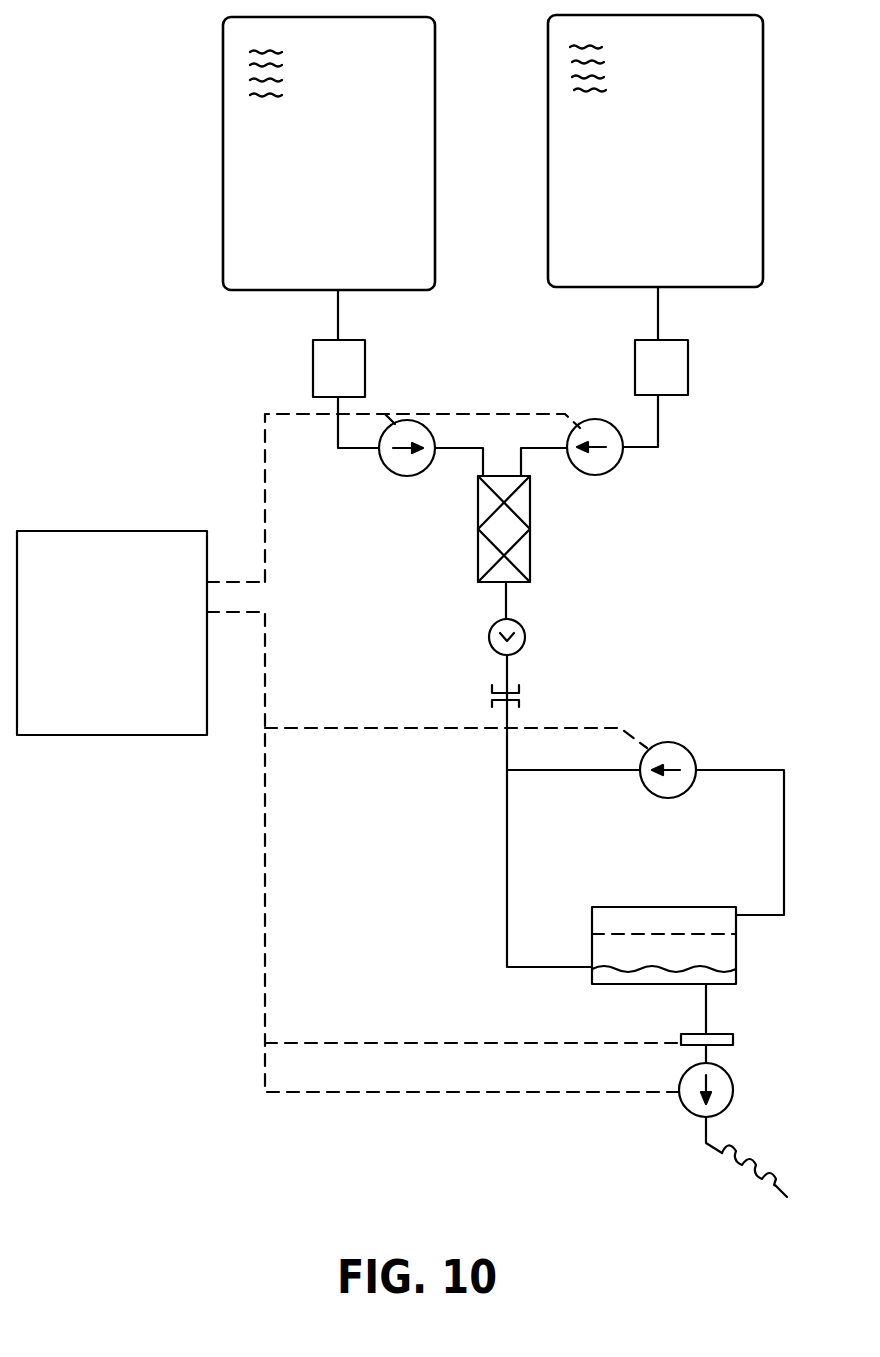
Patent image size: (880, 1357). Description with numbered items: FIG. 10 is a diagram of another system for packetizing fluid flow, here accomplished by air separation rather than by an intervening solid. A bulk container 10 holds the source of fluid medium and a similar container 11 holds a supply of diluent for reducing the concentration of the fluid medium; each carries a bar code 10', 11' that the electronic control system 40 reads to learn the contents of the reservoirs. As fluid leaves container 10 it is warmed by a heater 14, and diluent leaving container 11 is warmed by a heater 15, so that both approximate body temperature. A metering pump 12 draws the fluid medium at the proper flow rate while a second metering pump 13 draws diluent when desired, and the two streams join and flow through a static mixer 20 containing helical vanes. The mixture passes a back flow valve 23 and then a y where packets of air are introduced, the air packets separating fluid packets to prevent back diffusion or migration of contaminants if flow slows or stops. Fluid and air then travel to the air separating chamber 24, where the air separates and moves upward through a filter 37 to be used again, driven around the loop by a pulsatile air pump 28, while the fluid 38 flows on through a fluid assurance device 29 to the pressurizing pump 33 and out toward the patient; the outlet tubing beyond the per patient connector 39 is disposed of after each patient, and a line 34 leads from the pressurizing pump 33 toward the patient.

The bulk container 10 is at (356, 153).
The bar code 10' is at (289, 92).
The container 11 is at (684, 151).
The bar code 11' is at (612, 85).
The metering pump 12 is at (382, 464).
The second metering pump 13 is at (619, 461).
The heater 14 is at (380, 346).
The heater 15 is at (688, 363).
The static mixer 20 is at (531, 547).
The back flow valve 23 is at (488, 637).
The air separating chamber 24 is at (736, 957).
The pulsatile air pump 28 is at (676, 743).
The fluid assurance device 29 is at (733, 1040).
The pressurizing pump 33 is at (733, 1082).
The dispensing line 34 is at (797, 1163).
The filter 37 is at (663, 920).
The fluid 38 is at (662, 974).
The per patient connector 39 is at (537, 691).
The electronic control system 40 is at (121, 625).